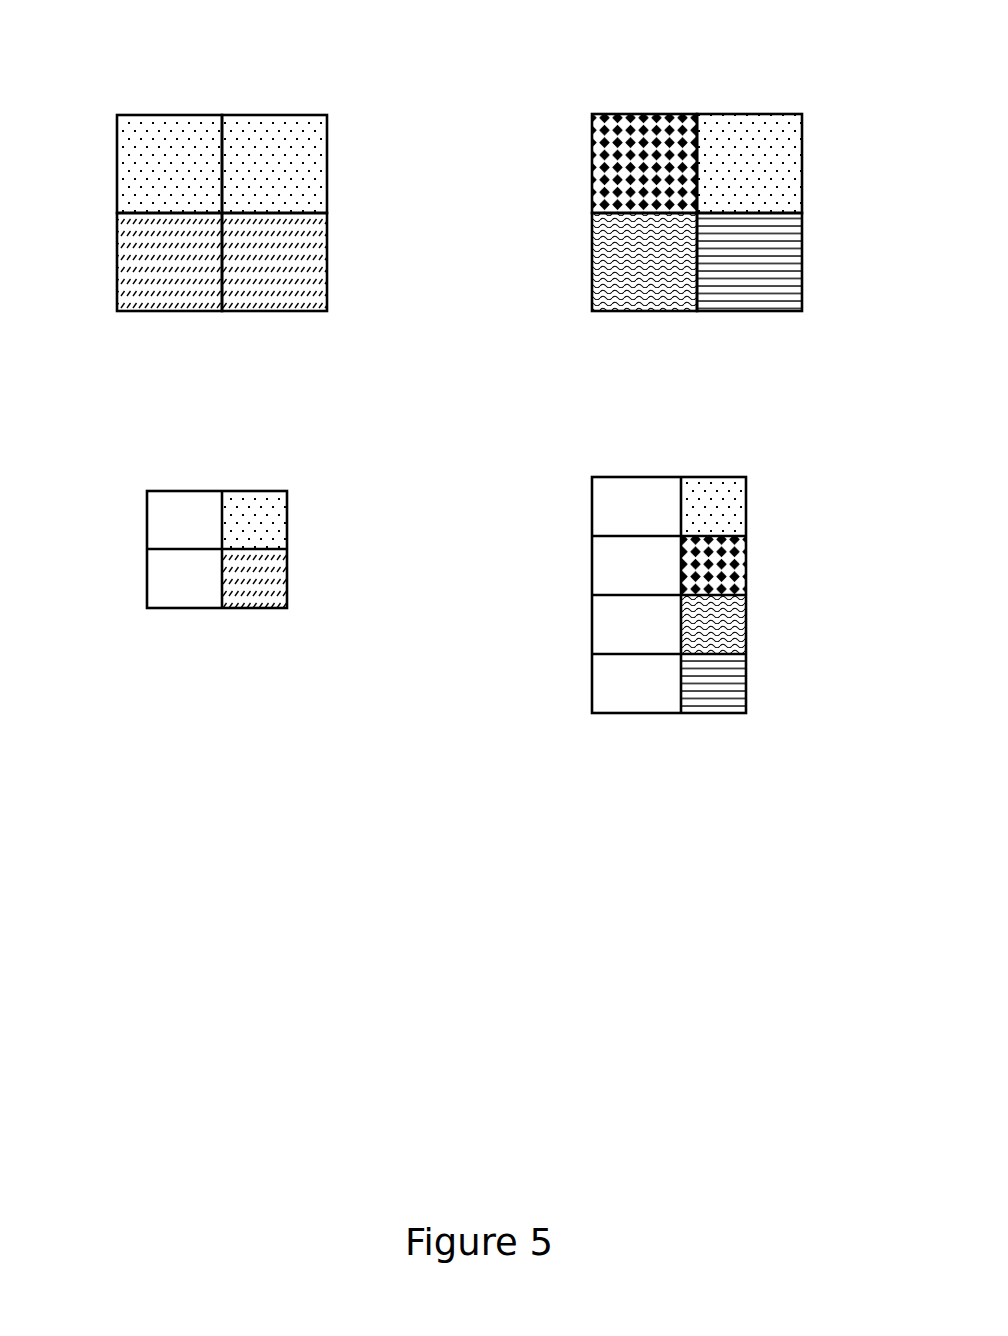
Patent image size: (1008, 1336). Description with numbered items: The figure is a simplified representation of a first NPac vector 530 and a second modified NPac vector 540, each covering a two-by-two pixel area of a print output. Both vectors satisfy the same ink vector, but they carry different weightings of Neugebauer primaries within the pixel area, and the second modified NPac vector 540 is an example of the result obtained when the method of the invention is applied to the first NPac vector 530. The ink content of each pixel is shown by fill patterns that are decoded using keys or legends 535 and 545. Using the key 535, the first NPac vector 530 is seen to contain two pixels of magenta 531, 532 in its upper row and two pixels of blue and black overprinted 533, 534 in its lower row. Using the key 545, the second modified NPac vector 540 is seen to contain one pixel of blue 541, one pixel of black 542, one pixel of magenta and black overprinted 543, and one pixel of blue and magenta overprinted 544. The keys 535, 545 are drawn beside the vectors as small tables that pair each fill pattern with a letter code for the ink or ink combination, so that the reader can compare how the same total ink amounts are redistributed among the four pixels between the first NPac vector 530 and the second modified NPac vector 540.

The first NPac vector 530 is at (226, 156).
The magenta pixel 531 is at (117, 183).
The magenta pixel 532 is at (327, 168).
The blue and black overprinted pixel 533 is at (117, 260).
The blue and black overprinted pixel 534 is at (327, 258).
The key 535 is at (147, 578).
The second modified NPac vector 540 is at (697, 161).
The blue pixel 541 is at (592, 162).
The black pixel 542 is at (802, 163).
The magenta and black overprinted pixel 543 is at (592, 262).
The blue and magenta overprinted pixel 544 is at (802, 262).
The key 545 is at (592, 575).